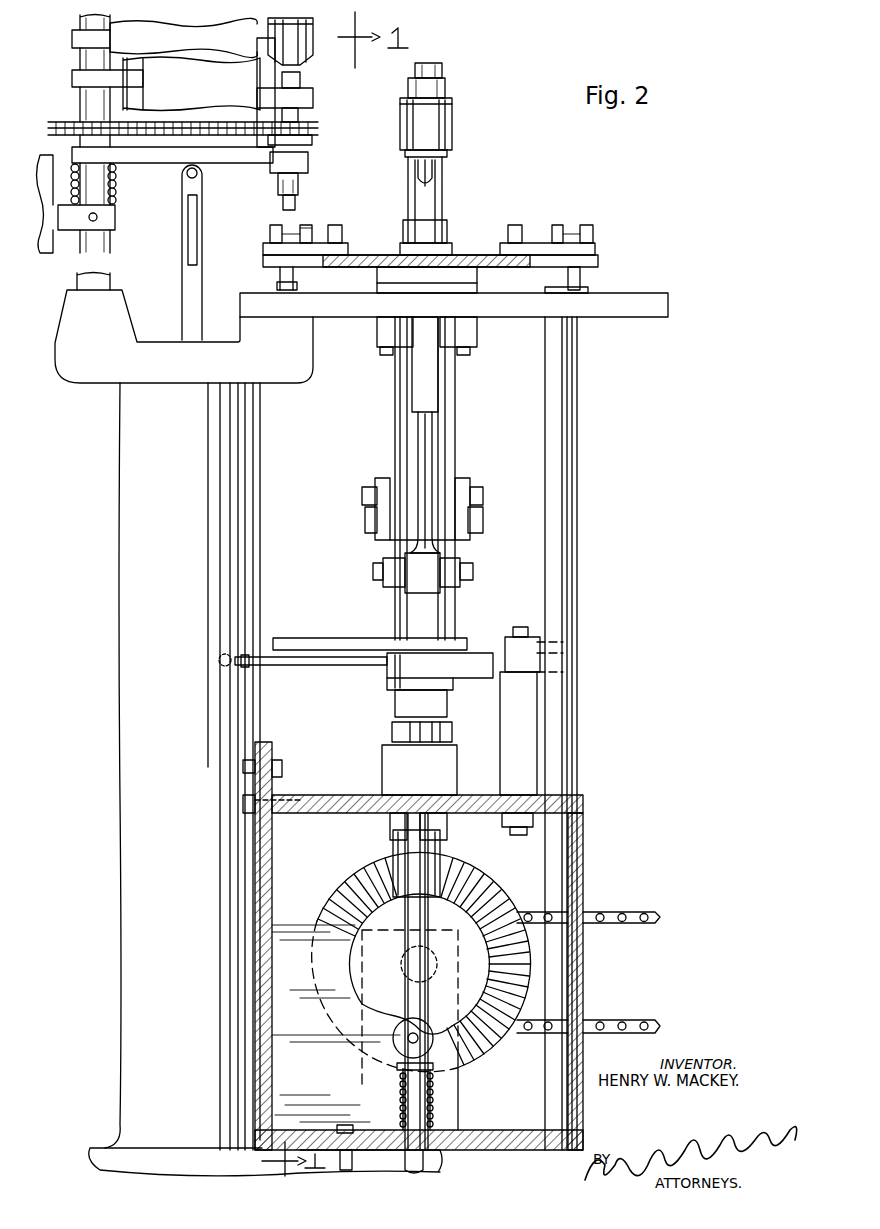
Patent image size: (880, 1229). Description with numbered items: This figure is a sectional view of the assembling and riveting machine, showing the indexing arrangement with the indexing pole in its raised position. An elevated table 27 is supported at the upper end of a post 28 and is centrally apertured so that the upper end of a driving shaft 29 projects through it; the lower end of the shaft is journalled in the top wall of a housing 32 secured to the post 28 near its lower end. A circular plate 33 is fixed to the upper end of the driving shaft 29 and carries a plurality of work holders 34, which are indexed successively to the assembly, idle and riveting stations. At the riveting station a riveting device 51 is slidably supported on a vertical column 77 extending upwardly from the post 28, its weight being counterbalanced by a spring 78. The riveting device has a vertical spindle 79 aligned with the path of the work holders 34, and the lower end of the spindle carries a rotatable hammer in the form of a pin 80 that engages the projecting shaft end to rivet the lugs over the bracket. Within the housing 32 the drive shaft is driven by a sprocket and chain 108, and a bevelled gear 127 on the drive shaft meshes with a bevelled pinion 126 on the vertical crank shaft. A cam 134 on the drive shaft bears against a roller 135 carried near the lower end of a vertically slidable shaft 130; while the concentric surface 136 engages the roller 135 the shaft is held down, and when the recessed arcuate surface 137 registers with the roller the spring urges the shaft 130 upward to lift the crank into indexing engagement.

The table 27 is at (668, 301).
The post 28 is at (120, 624).
The driving shaft 29 is at (447, 622).
The housing 32 is at (302, 796).
The circular plate 33 is at (460, 255).
The work holders 34 is at (328, 222).
The riveting device 51 is at (328, 131).
The vertical column 77 is at (110, 240).
The spring 78 is at (117, 186).
The spindle 79 is at (300, 73).
The pin 80 is at (283, 204).
The chain 108 is at (608, 912).
The bevelled pinion 126 is at (437, 862).
The bevelled gear 127 is at (470, 1050).
The vertically slidable shaft 130 is at (405, 995).
The cam 134 is at (468, 978).
The roller 135 is at (400, 1060).
The surface 136 is at (482, 886).
The arcuate surface 137 is at (396, 1020).